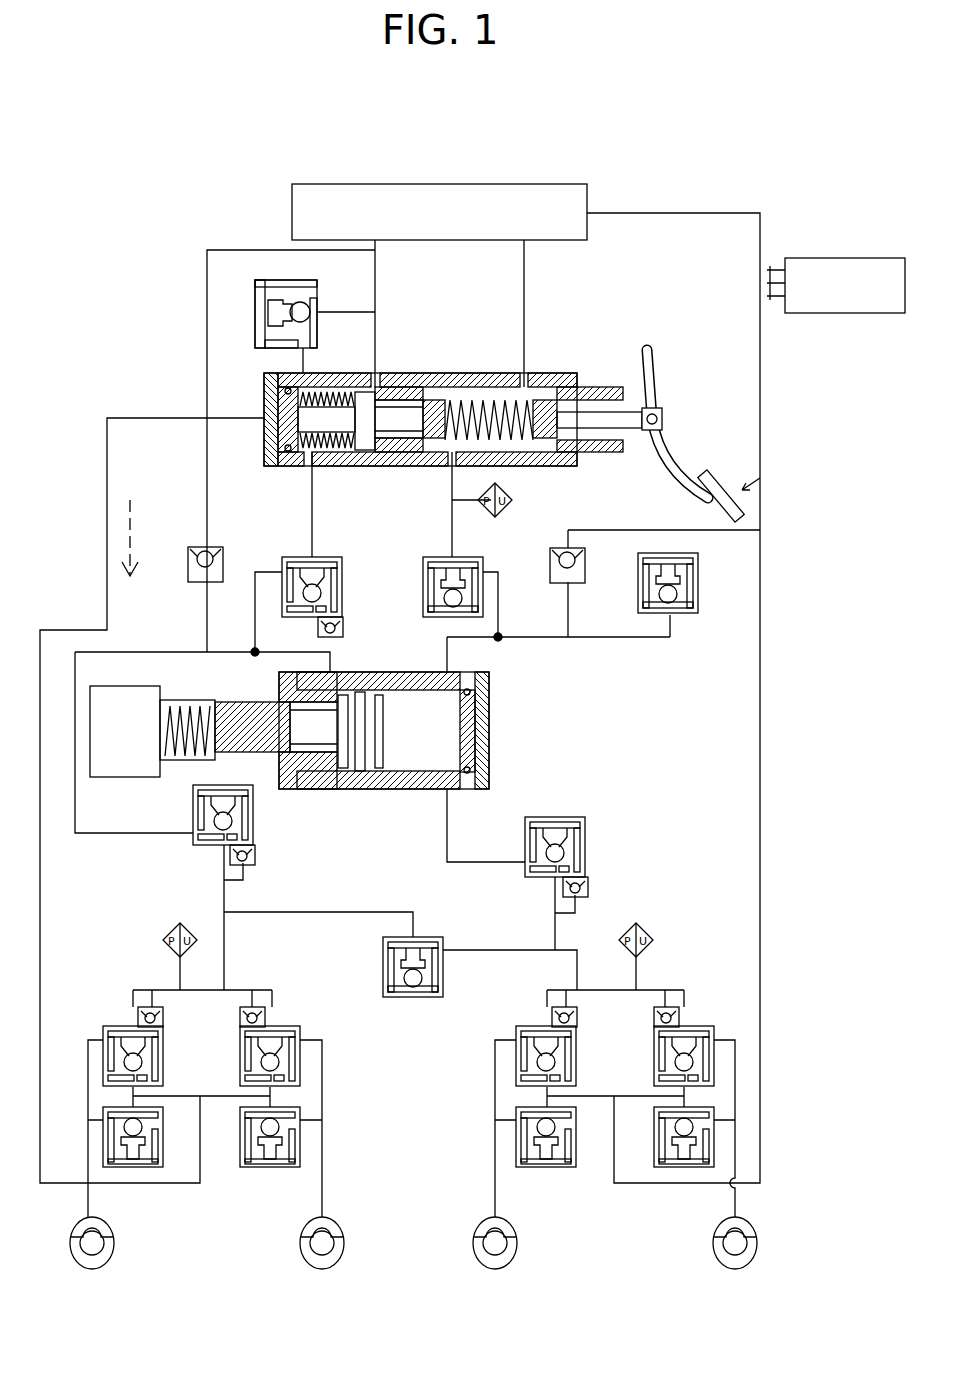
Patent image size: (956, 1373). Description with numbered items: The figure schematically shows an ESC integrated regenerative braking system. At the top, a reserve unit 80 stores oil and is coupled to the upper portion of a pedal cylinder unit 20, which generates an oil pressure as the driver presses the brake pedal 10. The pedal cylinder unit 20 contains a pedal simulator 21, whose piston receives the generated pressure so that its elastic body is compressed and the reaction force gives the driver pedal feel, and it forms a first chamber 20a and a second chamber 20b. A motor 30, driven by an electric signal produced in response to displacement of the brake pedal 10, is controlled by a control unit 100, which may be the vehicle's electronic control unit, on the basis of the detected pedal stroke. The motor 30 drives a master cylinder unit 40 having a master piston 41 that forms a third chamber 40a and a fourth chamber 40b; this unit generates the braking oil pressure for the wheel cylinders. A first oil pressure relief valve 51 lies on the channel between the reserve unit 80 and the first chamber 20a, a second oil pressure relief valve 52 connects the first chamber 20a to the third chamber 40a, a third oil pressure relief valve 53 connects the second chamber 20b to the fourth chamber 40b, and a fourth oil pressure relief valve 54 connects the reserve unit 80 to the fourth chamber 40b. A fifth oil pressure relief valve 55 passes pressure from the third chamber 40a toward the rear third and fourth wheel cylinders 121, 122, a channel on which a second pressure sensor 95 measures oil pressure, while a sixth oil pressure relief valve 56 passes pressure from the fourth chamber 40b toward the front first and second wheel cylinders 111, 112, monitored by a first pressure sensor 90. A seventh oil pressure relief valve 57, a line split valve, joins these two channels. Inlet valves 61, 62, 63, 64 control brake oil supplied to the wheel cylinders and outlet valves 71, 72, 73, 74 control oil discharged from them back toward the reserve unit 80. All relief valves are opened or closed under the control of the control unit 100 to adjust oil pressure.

The brake pedal 10 is at (680, 465).
The pedal cylinder unit 20 is at (443, 417).
The first chamber 20a is at (330, 466).
The second chamber 20b is at (523, 466).
The pedal simulator 21 is at (404, 373).
The motor 30 is at (130, 777).
The master cylinder unit 40 is at (352, 735).
The third chamber 40a is at (418, 745).
The fourth chamber 40b is at (322, 789).
The master piston 41 is at (387, 720).
The first oil pressure relief valve 51 is at (255, 318).
The second oil pressure relief valve 52 is at (343, 590).
The third oil pressure relief valve 53 is at (483, 599).
The fourth oil pressure relief valve 54 is at (698, 597).
The fifth oil pressure relief valve 55 is at (193, 835).
The sixth oil pressure relief valve 56 is at (585, 883).
The seventh oil pressure relief valve 57 is at (430, 937).
The inlet valve 61 is at (113, 1026).
The inlet valve 62 is at (290, 1026).
The inlet valve 63 is at (527, 1026).
The inlet valve 64 is at (702, 1026).
The outlet valve 71 is at (138, 1168).
The outlet valve 72 is at (262, 1168).
The outlet valve 73 is at (545, 1170).
The outlet valve 74 is at (680, 1170).
The reserve unit 80 is at (443, 184).
The first pressure sensor 90 is at (652, 928).
The second pressure sensor 95 is at (165, 928).
The control unit 100 is at (835, 258).
The first wheel cylinder 111 is at (517, 1252).
The second wheel cylinder 112 is at (757, 1252).
The third wheel cylinder 121 is at (114, 1252).
The fourth wheel cylinder 122 is at (344, 1252).